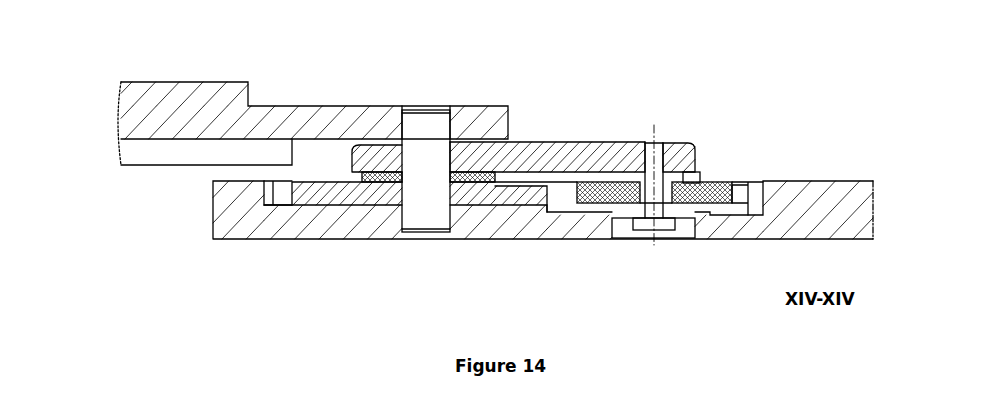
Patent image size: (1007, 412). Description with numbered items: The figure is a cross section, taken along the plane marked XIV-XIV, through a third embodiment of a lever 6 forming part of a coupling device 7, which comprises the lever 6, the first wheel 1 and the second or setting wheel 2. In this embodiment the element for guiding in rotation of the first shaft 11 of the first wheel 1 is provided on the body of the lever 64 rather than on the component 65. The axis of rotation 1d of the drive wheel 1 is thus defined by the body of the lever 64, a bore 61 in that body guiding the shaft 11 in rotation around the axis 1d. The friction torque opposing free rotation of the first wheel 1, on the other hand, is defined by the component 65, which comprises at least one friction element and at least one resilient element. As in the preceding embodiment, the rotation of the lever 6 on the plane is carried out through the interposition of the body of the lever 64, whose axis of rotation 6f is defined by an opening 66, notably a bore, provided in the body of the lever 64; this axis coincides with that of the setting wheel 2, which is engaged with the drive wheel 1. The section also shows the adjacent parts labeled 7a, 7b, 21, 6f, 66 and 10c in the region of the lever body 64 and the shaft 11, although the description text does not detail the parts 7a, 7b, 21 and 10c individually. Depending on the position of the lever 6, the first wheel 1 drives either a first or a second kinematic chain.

The upper arm of clamp 7a is at (187, 112).
The axis of rotation 6f is at (423, 114).
The opening 66 is at (400, 150).
The bolt 21 is at (437, 125).
The lever 6 is at (535, 142).
The body of the lever 64 is at (591, 142).
The bore 61 is at (645, 150).
The axis of rotation 1d is at (655, 137).
The coupling device 7 is at (720, 117).
The first shaft 11 is at (665, 178).
The first wheel 1 is at (742, 181).
The setting wheel 2 is at (323, 190).
The lower arm of clamp 7b is at (290, 233).
The component 65 is at (487, 177).
The elastic member 10c is at (627, 175).